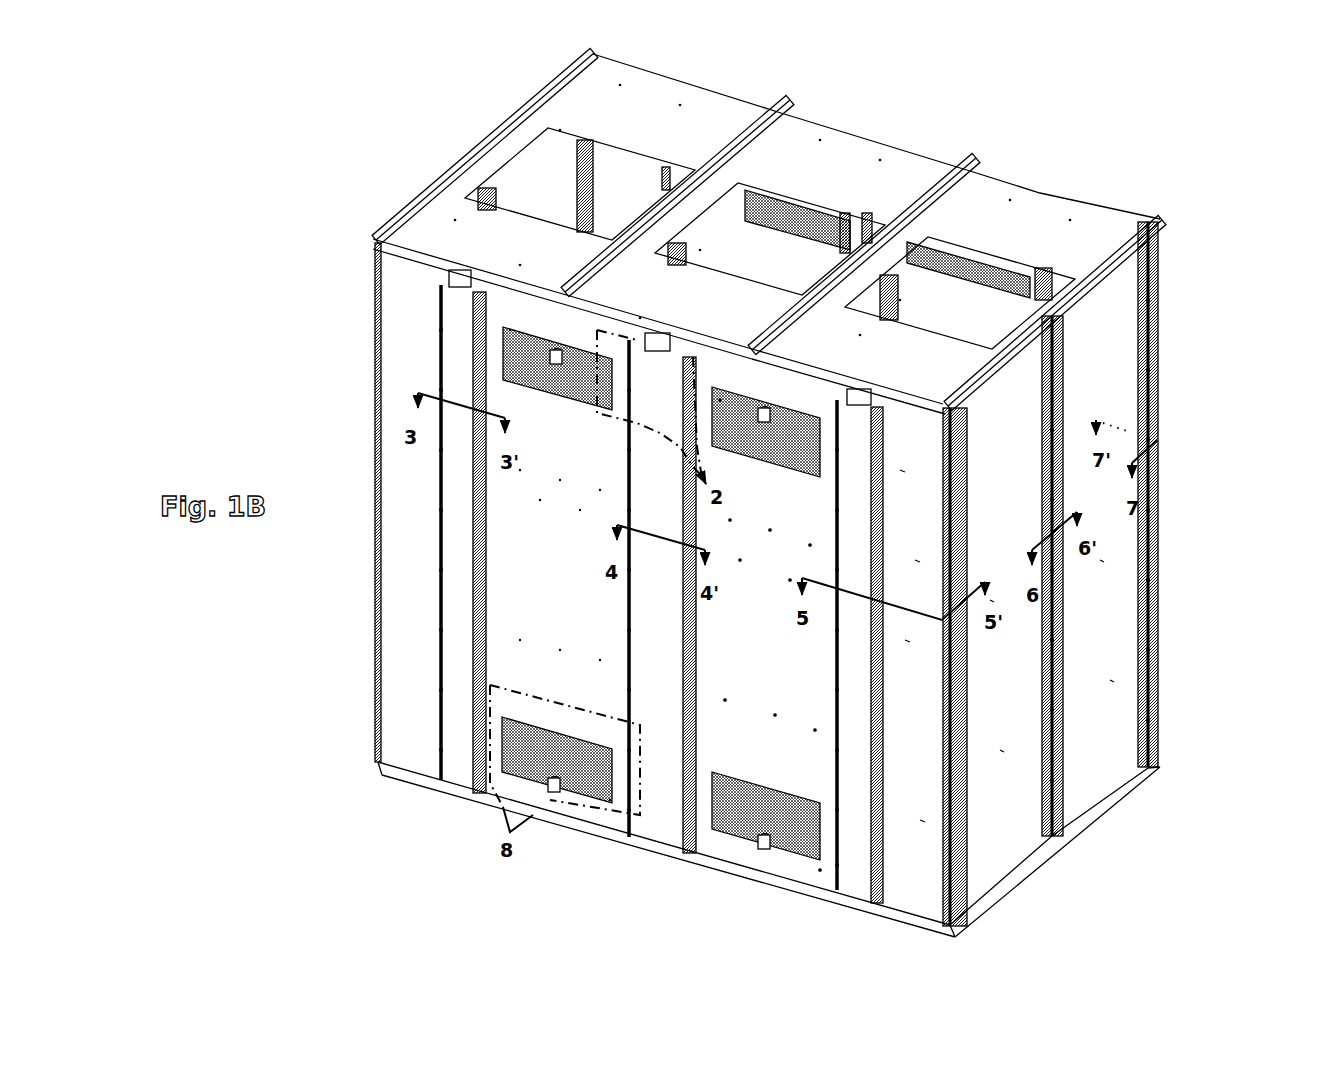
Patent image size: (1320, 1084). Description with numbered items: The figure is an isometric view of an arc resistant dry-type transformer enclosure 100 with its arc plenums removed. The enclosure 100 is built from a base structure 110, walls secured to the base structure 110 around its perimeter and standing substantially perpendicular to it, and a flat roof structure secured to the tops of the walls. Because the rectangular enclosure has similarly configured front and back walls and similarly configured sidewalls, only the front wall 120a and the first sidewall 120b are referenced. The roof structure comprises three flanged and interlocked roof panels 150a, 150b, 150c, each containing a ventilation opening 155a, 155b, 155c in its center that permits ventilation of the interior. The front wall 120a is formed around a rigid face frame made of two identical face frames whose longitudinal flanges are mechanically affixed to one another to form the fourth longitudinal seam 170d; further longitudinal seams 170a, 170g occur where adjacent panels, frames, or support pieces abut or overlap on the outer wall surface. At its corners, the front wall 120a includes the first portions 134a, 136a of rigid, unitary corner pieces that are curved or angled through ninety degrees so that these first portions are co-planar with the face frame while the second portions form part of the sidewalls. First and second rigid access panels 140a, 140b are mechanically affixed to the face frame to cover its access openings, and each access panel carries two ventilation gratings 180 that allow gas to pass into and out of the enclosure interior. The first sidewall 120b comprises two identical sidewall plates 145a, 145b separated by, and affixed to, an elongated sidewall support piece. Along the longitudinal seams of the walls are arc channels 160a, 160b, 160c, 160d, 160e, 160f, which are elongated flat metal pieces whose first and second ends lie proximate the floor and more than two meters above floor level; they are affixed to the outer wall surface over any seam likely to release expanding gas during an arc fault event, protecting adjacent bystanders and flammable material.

The transformer enclosure 100 is at (1086, 130).
The base structure 110 is at (393, 772).
The front wall 120a is at (314, 623).
The first sidewall 120b is at (1222, 392).
The first portion of first corner piece 134a is at (405, 502).
The first portion of second corner piece 136a is at (917, 646).
The first rigid access panel 140a is at (560, 565).
The second rigid access panel 140b is at (770, 635).
The sidewall plate 145a is at (1010, 578).
The sidewall plate 145b is at (1108, 511).
The roof panel 150a is at (583, 176).
The roof panel 150b is at (771, 236).
The roof panel 150c is at (959, 292).
The ventilation opening 155a is at (565, 186).
The ventilation opening 155b is at (770, 246).
The ventilation opening 155c is at (979, 306).
The arc channel 160a is at (460, 765).
The arc channel 160b is at (660, 818).
The arc channel 160c is at (855, 863).
The arc channel 160d is at (966, 862).
The arc channel 160e is at (1058, 798).
The arc channel 160f is at (1158, 720).
The longitudinal seam 170a is at (455, 266).
The fourth longitudinal seam 170d is at (656, 329).
The longitudinal seam 170g is at (868, 386).
The ventilation grating 180 is at (566, 378).